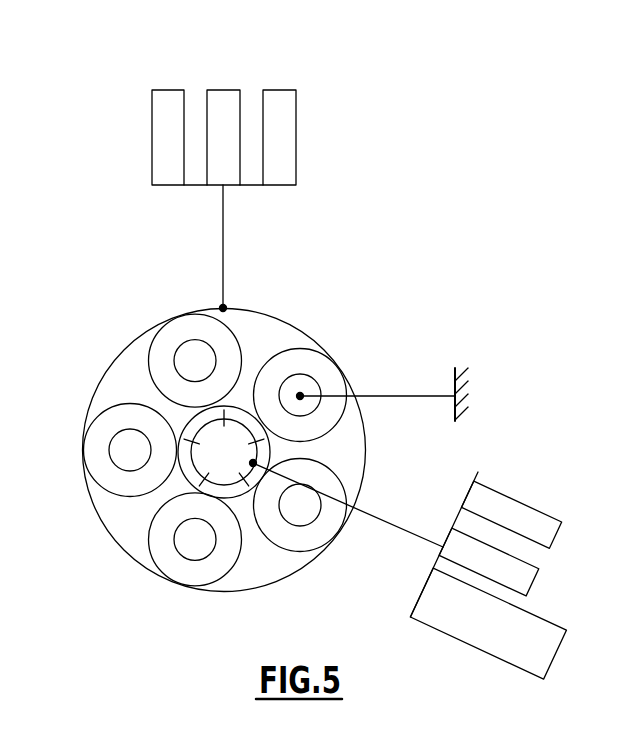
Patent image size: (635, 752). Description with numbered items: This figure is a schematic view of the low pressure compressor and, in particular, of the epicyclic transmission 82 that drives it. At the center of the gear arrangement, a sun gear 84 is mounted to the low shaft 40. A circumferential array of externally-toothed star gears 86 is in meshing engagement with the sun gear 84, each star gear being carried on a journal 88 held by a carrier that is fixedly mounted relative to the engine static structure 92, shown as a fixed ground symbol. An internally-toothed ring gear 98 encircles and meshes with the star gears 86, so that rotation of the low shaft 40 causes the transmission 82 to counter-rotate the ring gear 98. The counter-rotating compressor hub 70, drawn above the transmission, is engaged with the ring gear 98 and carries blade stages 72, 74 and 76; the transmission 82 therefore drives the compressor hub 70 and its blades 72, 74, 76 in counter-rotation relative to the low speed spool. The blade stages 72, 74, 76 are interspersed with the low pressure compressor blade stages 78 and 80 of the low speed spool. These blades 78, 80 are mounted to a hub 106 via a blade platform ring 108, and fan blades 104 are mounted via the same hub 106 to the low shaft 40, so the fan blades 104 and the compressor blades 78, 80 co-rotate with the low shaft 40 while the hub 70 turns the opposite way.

The low shaft 40 is at (240, 460).
The counter-rotating compressor hub 70 is at (237, 128).
The blade stage 72 is at (173, 95).
The blade stage 74 is at (228, 95).
The blade stage 76 is at (287, 95).
The blade stage 78 is at (489, 562).
The blade stage 80 is at (512, 514).
The transmission 82 is at (345, 292).
The sun gear 84 is at (123, 548).
The star gears 86 is at (332, 380).
The journals 88 is at (187, 352).
The engine static structure 92 is at (455, 405).
The ring gear 98 is at (257, 317).
The fan blades 104 is at (488, 623).
The hub 106 is at (432, 586).
The blade platform ring 108 is at (444, 544).